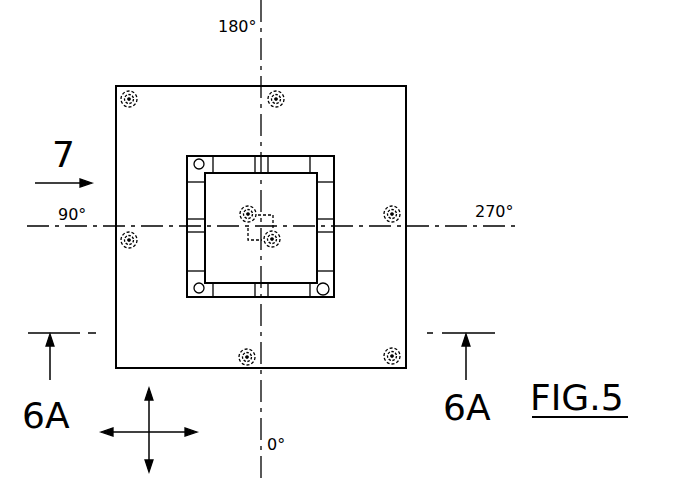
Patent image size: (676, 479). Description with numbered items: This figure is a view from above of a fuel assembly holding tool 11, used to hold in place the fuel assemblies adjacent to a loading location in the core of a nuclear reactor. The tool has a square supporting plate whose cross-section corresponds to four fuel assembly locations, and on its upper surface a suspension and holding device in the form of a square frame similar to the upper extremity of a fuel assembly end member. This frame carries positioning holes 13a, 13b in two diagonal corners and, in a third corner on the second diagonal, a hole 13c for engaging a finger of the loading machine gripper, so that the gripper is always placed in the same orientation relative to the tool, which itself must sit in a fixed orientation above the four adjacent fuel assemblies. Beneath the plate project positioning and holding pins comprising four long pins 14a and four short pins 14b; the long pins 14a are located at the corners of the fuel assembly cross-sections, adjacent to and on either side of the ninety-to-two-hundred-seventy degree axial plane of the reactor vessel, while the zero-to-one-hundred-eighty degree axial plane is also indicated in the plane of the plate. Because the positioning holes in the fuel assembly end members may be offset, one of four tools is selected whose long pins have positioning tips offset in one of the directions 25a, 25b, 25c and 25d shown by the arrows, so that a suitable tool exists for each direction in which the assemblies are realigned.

The fuel assembly holding tool 11 is at (423, 132).
The positioning hole 13a is at (193, 163).
The positioning hole 13b is at (329, 297).
The hole for engaging a finger of the gripper 13c is at (195, 298).
The long pins 14a is at (124, 247).
The short pins 14b is at (126, 90).
The direction 25a is at (165, 407).
The direction 25b is at (187, 424).
The direction 25c is at (165, 455).
The direction 25d is at (117, 424).